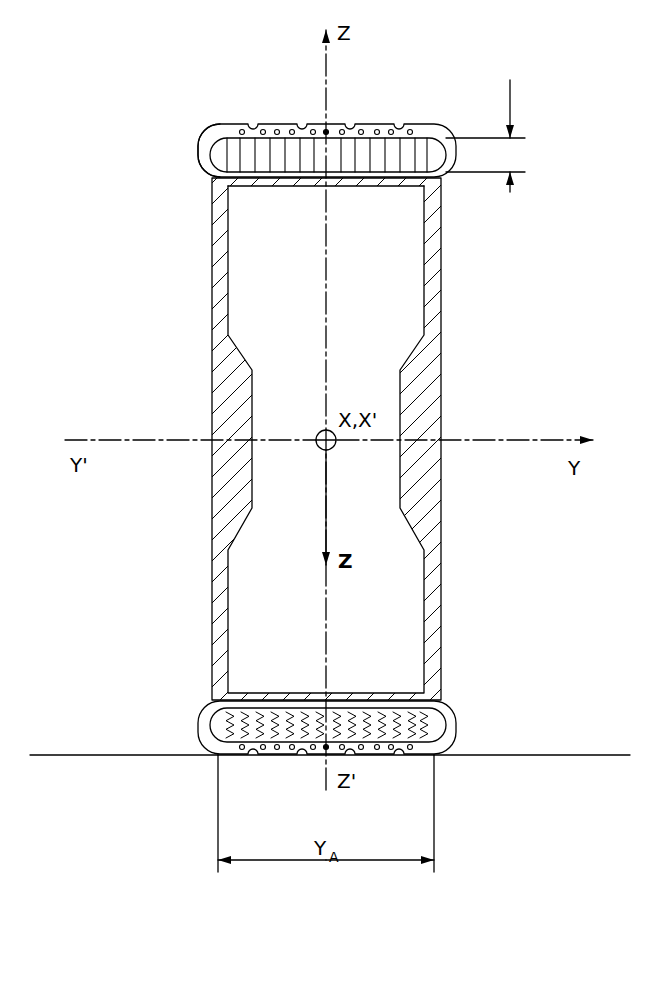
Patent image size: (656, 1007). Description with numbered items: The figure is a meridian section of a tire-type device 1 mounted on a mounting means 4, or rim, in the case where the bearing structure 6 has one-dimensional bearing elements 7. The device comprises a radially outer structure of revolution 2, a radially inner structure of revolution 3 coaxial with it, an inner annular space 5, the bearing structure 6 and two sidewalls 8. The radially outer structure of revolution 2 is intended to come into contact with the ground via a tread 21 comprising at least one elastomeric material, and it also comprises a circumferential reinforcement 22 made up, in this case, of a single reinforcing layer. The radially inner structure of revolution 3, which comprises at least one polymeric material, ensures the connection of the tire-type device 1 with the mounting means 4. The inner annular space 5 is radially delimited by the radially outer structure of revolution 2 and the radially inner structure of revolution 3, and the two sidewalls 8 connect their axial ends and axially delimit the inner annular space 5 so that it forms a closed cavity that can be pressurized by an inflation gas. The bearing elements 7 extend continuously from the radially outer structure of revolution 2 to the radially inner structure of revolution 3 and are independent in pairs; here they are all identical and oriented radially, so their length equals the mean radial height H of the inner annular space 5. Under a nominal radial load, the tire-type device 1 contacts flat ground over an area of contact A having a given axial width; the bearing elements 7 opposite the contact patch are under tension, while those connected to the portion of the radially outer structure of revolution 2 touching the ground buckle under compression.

The tire-type device 1 is at (200, 118).
The radially outer structure of revolution 2 is at (275, 122).
The tread 21 is at (341, 122).
The circumferential reinforcement 22 is at (378, 136).
The radially inner structure of revolution 3 is at (285, 173).
The mounting means 4 is at (210, 322).
The inner annular space 5 is at (212, 155).
The bearing structure 6 is at (343, 163).
The bearing elements 7 is at (428, 160).
The sidewalls 8 is at (197, 150).
The area of contact A is at (283, 757).
The mean radial height of the inner annular space H is at (488, 136).